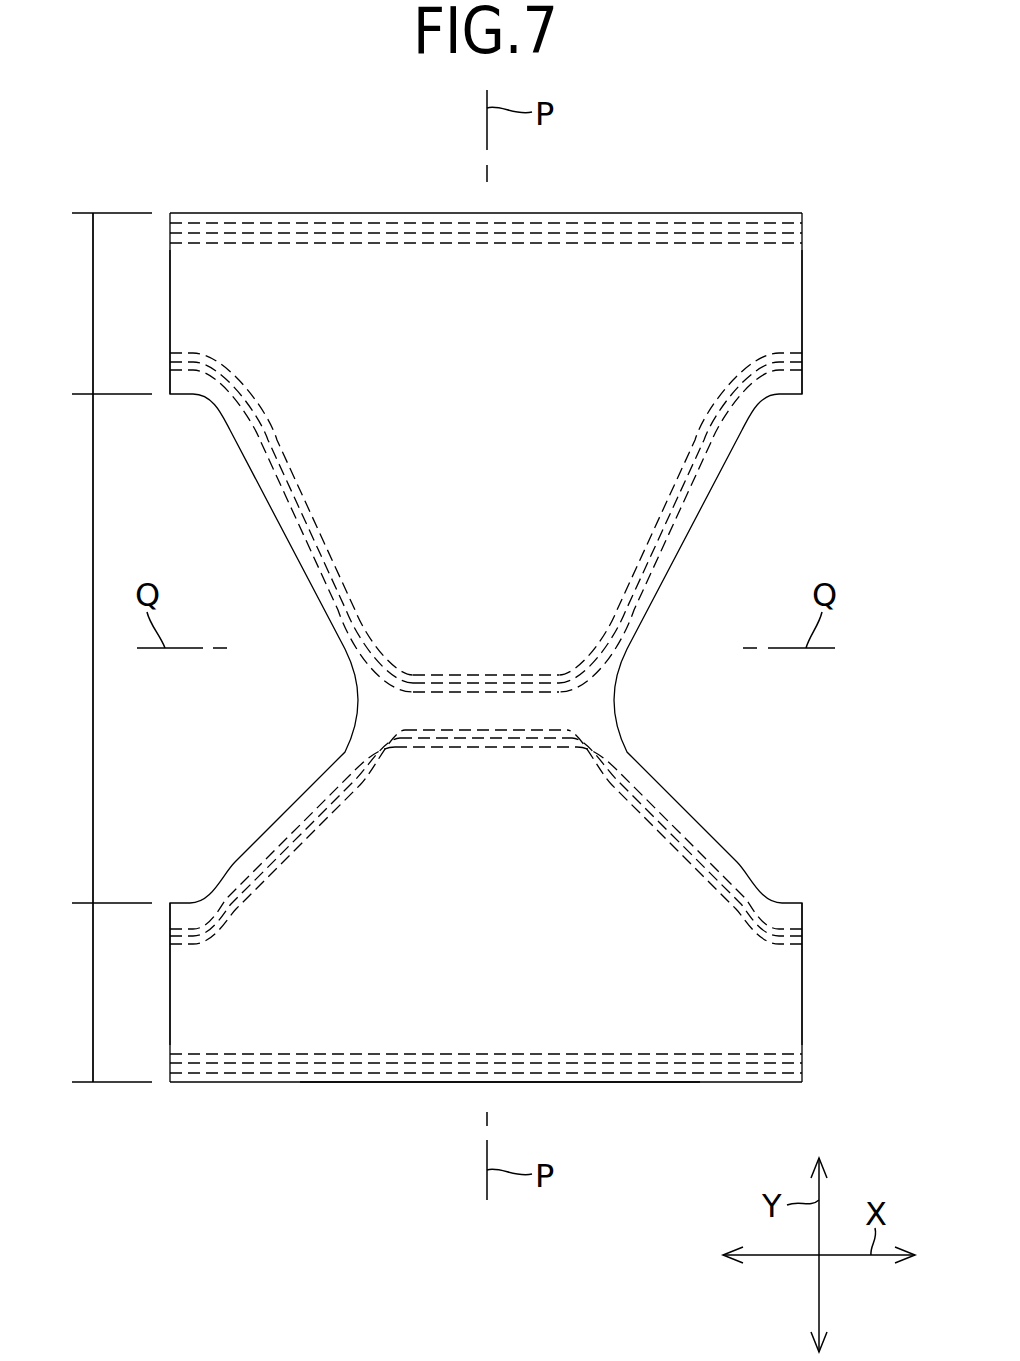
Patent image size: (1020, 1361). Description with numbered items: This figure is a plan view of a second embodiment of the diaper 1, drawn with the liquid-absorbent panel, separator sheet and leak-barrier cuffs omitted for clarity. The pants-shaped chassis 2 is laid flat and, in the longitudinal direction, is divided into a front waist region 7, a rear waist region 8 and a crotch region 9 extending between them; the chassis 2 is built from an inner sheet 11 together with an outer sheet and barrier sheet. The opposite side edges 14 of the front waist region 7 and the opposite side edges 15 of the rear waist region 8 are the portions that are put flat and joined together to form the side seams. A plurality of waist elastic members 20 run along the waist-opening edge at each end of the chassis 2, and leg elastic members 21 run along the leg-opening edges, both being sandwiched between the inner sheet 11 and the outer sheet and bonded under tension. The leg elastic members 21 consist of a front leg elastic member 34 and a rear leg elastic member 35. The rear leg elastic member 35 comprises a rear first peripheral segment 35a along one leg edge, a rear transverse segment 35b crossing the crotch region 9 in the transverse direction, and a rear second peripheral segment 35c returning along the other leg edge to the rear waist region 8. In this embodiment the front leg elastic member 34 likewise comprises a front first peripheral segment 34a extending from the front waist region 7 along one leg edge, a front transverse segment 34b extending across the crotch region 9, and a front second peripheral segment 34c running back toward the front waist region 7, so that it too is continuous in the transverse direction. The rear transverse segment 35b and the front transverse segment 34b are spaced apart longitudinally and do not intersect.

The diaper 1 is at (234, 118).
The chassis 2 is at (207, 186).
The front waist region 7 is at (93, 988).
The rear waist region 8 is at (93, 305).
The crotch region 9 is at (93, 668).
The inner sheet 11 is at (250, 1040).
The side edges of the front waist region 14 is at (172, 995).
The side edges of the rear waist region 15 is at (172, 292).
The waist elastic members 20 is at (636, 238).
The leg elastic members 21 is at (262, 663).
The front leg elastic member 34 is at (345, 748).
The rear leg elastic member 35 is at (345, 655).
The front first peripheral segment 34a is at (306, 838).
The front transverse segment 34b is at (487, 748).
The front second peripheral segment 34c is at (655, 838).
The rear first peripheral segment 35a is at (296, 465).
The rear transverse segment 35b is at (488, 680).
The rear second peripheral segment 35c is at (676, 465).